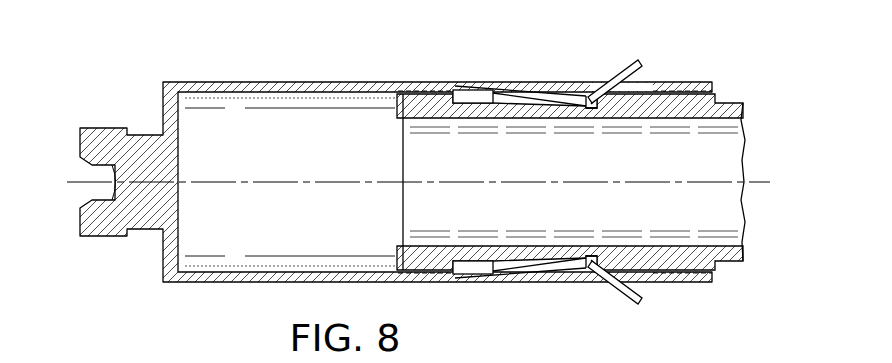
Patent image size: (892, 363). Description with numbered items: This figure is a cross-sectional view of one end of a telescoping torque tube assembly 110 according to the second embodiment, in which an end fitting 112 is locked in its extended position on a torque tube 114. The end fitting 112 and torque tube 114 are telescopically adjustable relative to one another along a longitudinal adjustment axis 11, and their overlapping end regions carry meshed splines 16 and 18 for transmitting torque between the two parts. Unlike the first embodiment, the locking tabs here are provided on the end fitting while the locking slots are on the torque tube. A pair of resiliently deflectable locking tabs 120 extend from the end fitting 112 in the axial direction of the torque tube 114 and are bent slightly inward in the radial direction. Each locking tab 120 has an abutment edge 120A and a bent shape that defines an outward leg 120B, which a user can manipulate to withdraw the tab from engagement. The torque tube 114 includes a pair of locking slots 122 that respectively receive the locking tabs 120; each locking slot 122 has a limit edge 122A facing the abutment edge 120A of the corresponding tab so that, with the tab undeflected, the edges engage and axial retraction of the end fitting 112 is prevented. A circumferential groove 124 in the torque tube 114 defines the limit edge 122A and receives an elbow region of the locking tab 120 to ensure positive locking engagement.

The telescoping torque tube assembly 110 is at (697, 66).
The end fitting 112 is at (248, 82).
The torque tube 114 is at (736, 104).
The longitudinal adjustment axis 11 is at (462, 181).
The splines 16 is at (408, 117).
The splines 18 is at (425, 91).
The locking tab 120 is at (502, 90).
The abutment edge 120A is at (605, 108).
The outward leg 120B is at (642, 60).
The locking slot 122 is at (493, 102).
The limit edge 122A is at (583, 93).
The circumferential groove 124 is at (590, 110).